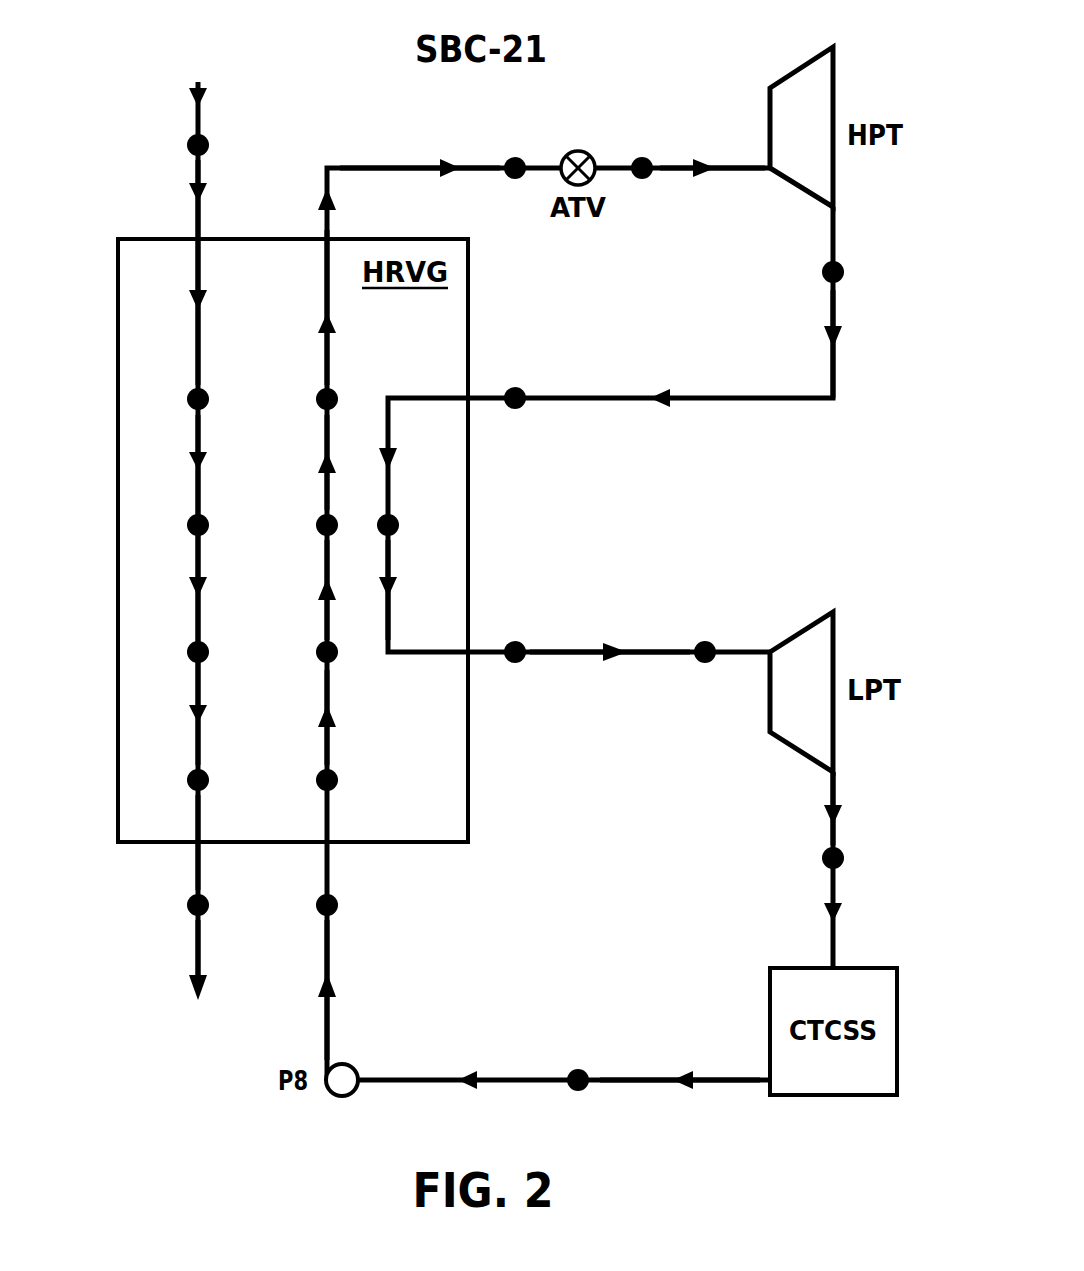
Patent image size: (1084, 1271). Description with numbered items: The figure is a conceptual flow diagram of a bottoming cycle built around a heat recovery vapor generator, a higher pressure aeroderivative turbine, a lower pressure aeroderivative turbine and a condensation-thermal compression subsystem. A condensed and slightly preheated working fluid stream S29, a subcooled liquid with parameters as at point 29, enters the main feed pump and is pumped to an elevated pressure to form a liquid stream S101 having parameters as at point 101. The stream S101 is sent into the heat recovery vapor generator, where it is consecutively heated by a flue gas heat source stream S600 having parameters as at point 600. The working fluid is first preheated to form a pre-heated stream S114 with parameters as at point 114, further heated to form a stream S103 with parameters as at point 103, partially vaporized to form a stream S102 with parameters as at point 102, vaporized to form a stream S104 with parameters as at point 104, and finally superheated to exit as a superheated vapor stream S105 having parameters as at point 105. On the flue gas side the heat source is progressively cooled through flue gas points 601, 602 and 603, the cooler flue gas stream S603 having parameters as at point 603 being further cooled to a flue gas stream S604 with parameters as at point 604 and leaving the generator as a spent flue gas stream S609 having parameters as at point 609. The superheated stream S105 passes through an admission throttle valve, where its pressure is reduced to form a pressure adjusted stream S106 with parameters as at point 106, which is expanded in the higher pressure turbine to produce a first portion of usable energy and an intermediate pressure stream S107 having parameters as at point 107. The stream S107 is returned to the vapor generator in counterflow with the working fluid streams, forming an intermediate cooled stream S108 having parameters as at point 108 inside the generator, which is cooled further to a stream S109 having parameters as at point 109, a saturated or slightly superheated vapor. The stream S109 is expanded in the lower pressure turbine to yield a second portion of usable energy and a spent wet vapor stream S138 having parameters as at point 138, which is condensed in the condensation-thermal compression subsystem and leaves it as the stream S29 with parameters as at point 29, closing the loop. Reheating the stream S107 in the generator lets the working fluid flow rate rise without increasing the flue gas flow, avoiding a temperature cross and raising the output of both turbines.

The flue gas heat source point 600 is at (173, 144).
The cooled flue gas point 601 is at (173, 398).
The partially cooler flue gas point 602 is at (173, 524).
The cooler flue gas point 603 is at (173, 651).
The intermediate flue gas point 604 is at (173, 779).
The spent flue gas point 609 is at (173, 904).
The pumped liquid point 101 is at (304, 904).
The pre-heated working fluid point 114 is at (304, 779).
The further heated working fluid point 103 is at (304, 651).
The partially vaporized working fluid point 102 is at (304, 524).
The vaporized working fluid point 104 is at (304, 398).
The superheated vapor point 105 is at (515, 146).
The pressure adjusted point 106 is at (642, 146).
The intermediate pressure point 107 is at (669, 332).
The intermediate cooled point 108 is at (413, 524).
The cooled intermediate pressure point 109 is at (610, 633).
The spent working fluid point 138 is at (809, 859).
The condensed working fluid point 29 is at (578, 1062).
The superheated stream S105 is at (403, 165).
The pressure adjusted stream S106 is at (737, 165).
The intermediate pressure stream S107 is at (705, 402).
The intermediate cooled, intermediate pressure stream S108 is at (390, 560).
The cooled intermediate pressure stream S109 is at (578, 647).
The spent working fluid stream S138 is at (830, 793).
The condensed and slightly preheated working fluid stream S29 is at (640, 1077).
The liquid stream S101 is at (330, 873).
The pre-heated working fluid stream S114 is at (323, 753).
The further heated working fluid stream S103 is at (323, 610).
The partially vaporized stream S102 is at (323, 492).
The vaporized working fluid stream S104 is at (323, 362).
The flue gas heat source stream S600 is at (195, 272).
The cooler flue gas stream S603 is at (197, 427).
The intermediate flue gas stream S604 is at (197, 815).
The spent flue gas stream S609 is at (197, 950).